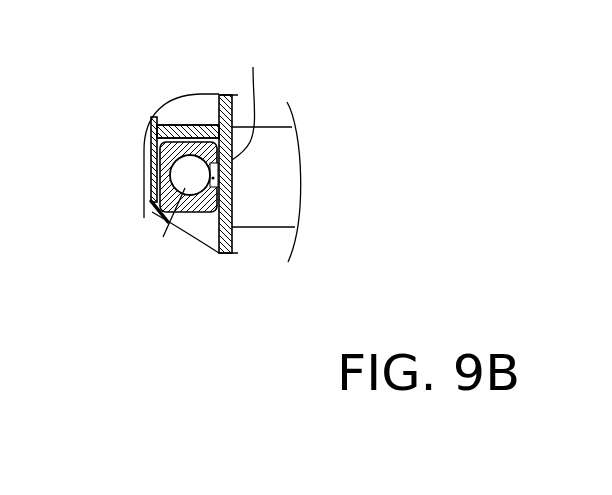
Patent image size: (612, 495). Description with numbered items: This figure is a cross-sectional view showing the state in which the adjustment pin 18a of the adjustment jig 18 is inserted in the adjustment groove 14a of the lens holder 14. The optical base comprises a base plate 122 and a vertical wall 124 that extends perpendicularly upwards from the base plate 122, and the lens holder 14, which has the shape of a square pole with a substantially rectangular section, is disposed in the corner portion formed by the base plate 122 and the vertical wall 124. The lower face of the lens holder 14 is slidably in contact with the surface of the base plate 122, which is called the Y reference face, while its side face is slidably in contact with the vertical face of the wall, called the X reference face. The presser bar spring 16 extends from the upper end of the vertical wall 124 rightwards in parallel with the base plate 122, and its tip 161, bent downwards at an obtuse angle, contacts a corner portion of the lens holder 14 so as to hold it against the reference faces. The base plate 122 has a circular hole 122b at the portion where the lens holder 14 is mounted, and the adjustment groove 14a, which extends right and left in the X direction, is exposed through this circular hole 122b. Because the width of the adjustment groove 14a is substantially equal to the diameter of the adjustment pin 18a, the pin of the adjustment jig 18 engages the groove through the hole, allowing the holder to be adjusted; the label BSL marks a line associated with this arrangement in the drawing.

The lens holder 14 is at (150, 148).
The adjustment groove 14a is at (186, 126).
The presser bar spring 16 is at (150, 178).
The adjustment jig 18 is at (270, 140).
The adjustment pin 18a is at (252, 99).
The base plate 122 is at (232, 211).
The circular hole 122b is at (232, 188).
The vertical wall 124 is at (196, 130).
The tip 161 is at (152, 218).
The bearing seal line BSL is at (163, 237).